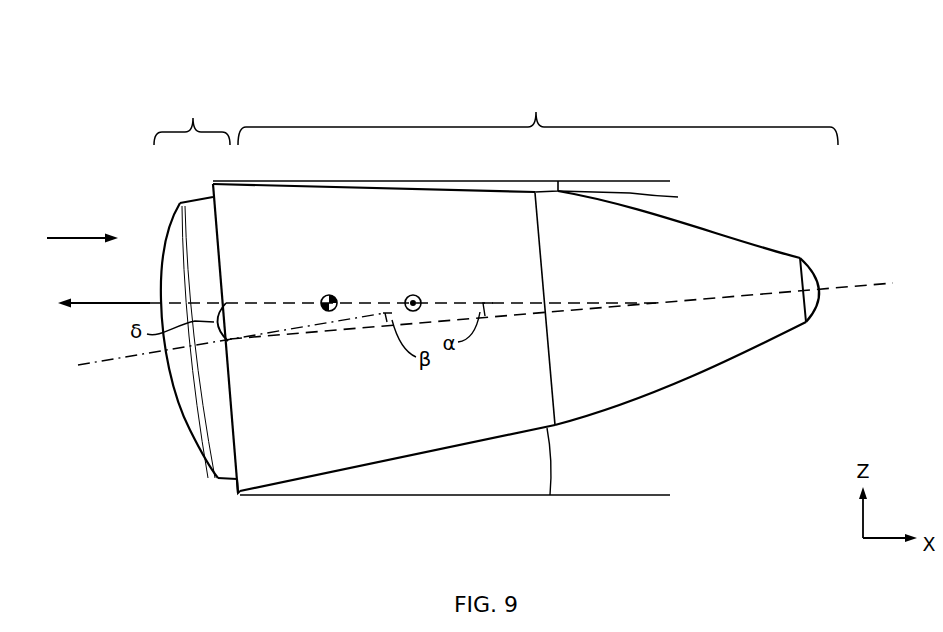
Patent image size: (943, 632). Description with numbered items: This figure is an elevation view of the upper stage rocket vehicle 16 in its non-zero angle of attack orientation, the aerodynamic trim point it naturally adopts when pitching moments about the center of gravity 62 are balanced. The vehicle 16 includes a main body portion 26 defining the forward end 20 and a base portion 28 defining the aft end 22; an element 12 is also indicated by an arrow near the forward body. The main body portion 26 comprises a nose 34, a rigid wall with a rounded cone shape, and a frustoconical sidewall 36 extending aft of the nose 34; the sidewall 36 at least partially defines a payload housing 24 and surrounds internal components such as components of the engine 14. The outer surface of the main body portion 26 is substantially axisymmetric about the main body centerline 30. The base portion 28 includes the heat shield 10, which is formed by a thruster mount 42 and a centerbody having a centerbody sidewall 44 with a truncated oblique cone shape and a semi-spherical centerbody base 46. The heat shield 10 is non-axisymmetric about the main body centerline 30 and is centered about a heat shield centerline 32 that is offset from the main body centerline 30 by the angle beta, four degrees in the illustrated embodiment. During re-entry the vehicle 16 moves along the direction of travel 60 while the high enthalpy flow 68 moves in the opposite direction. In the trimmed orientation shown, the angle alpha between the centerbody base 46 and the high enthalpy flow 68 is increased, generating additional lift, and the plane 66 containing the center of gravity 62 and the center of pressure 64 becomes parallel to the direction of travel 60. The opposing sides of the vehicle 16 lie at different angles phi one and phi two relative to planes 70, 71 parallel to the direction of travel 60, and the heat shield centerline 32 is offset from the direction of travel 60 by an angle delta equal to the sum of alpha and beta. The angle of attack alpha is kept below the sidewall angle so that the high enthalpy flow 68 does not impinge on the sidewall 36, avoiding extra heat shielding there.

The heat shield 10 is at (122, 500).
The body 12 is at (160, 180).
The engine 14 is at (98, 188).
The vehicle 16 is at (118, 70).
The forward end 20 is at (822, 307).
The aft end 22 is at (167, 242).
The payload housing 24 is at (707, 253).
The main body portion 26 is at (538, 256).
The base portion 28 is at (192, 117).
The main body centerline 30 is at (857, 282).
The heat shield centerline 32 is at (108, 364).
The nose 34 is at (797, 258).
The sidewall 36 is at (510, 193).
The thruster mount 42 is at (238, 496).
The centerbody sidewall 44 is at (230, 481).
The centerbody base 46 is at (178, 412).
The direction of travel 60 is at (103, 302).
The center of gravity 62 is at (334, 296).
The center of pressure 64 is at (419, 297).
The plane 66 is at (378, 302).
The high enthalpy flow 68 is at (62, 235).
The plane 70 is at (643, 181).
The plane 71 is at (643, 495).